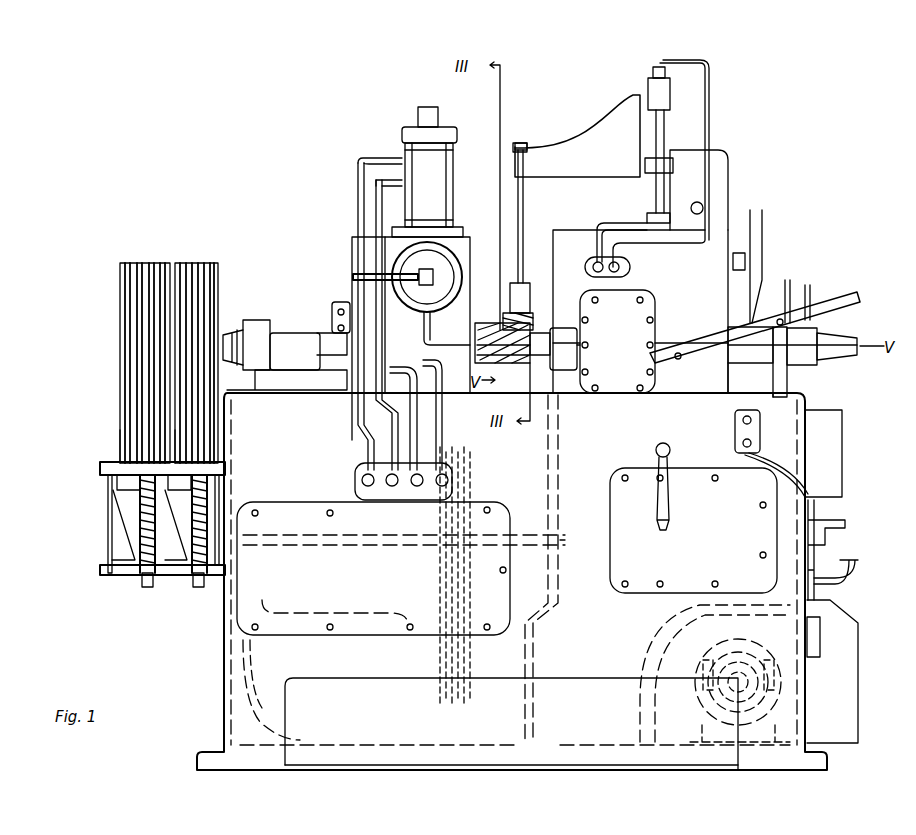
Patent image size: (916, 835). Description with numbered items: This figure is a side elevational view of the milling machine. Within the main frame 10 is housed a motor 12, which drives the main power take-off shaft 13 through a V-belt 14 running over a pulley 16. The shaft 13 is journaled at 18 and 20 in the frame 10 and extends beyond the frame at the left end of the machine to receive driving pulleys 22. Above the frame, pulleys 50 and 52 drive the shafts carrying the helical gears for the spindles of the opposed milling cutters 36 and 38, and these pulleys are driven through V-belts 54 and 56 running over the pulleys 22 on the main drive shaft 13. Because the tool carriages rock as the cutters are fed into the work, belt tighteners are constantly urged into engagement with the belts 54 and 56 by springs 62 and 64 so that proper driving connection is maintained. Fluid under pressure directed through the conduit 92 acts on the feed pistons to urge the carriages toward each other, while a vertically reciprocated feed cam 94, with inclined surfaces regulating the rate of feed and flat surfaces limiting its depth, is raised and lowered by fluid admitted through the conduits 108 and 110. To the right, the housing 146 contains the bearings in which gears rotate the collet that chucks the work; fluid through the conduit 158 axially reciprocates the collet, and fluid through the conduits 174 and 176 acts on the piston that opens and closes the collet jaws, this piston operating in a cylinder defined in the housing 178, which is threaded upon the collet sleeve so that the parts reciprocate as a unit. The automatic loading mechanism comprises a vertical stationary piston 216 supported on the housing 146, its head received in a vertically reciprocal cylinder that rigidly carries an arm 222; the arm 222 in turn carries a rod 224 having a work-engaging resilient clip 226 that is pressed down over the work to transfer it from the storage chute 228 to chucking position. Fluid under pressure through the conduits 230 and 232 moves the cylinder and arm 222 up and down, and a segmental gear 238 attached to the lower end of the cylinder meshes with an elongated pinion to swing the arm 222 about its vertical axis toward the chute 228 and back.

The main frame 10 is at (224, 652).
The motor 12 is at (352, 617).
The main power take-off shaft 13 is at (330, 560).
The V-belt 14 is at (462, 598).
The pulley 16 is at (460, 490).
The journal 18 is at (240, 535).
The journal 20 is at (565, 540).
The driving pulleys 22 is at (205, 520).
The milling cutter 36 is at (540, 370).
The milling cutter 38 is at (498, 365).
The pulley 50 is at (135, 263).
The pulley 52 is at (198, 263).
The V-belt 54 is at (125, 441).
The V-belt 56 is at (215, 437).
The spring 62 is at (145, 580).
The spring 64 is at (197, 582).
The conduit 92 is at (428, 256).
The feed cam 94 is at (438, 115).
The conduit 108 is at (352, 163).
The conduit 110 is at (395, 180).
The housing 146 is at (637, 278).
The conduit 158 is at (758, 270).
The conduit 174 is at (793, 282).
The conduit 176 is at (812, 300).
The housing 178 is at (800, 365).
The vertical stationary piston 216 is at (650, 208).
The arm 222 is at (582, 145).
The rod 224 is at (520, 200).
The resilient clip 226 is at (516, 270).
The storage chute 228 is at (703, 332).
The conduit 230 is at (590, 222).
The conduit 232 is at (665, 68).
The segmental gear 238 is at (645, 165).